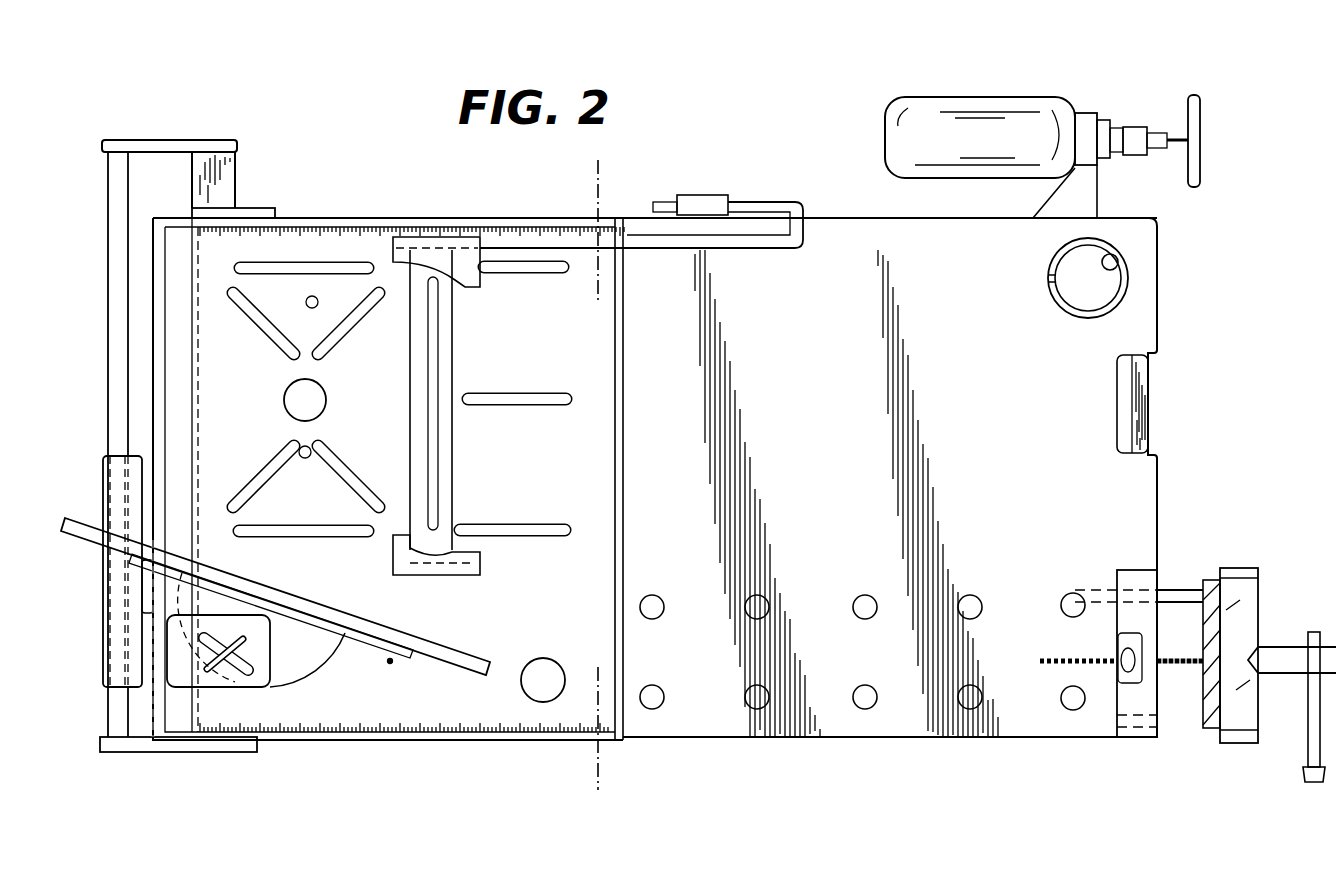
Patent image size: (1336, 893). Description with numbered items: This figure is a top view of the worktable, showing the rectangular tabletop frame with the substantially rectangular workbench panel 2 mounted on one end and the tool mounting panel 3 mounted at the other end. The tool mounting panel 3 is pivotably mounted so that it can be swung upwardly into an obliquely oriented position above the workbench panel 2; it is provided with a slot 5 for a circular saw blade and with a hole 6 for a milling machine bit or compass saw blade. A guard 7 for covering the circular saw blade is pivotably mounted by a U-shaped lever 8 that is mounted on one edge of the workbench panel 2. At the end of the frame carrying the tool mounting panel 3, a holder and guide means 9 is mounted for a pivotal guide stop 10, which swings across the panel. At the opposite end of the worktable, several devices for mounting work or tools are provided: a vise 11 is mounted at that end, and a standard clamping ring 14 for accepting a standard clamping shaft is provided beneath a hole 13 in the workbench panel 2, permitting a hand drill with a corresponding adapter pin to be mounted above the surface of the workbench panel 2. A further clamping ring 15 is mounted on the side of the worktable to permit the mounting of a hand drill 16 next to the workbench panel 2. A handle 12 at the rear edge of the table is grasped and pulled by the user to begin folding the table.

The workbench panel 2 is at (838, 255).
The tool mounting panel 3 is at (587, 277).
The slot 5 is at (436, 351).
The hole 6 is at (326, 400).
The guard 7 is at (478, 560).
The U-shaped lever 8 is at (768, 203).
The holder and guide means 9 is at (104, 402).
The pivotal guide stop 10 is at (293, 600).
The vise 11 is at (1237, 554).
The handle 12 is at (1147, 410).
The hole 13 is at (1123, 263).
The standard clamping ring 14 is at (1125, 280).
The clamping ring 15 is at (1090, 186).
The hand drill 16 is at (1035, 135).